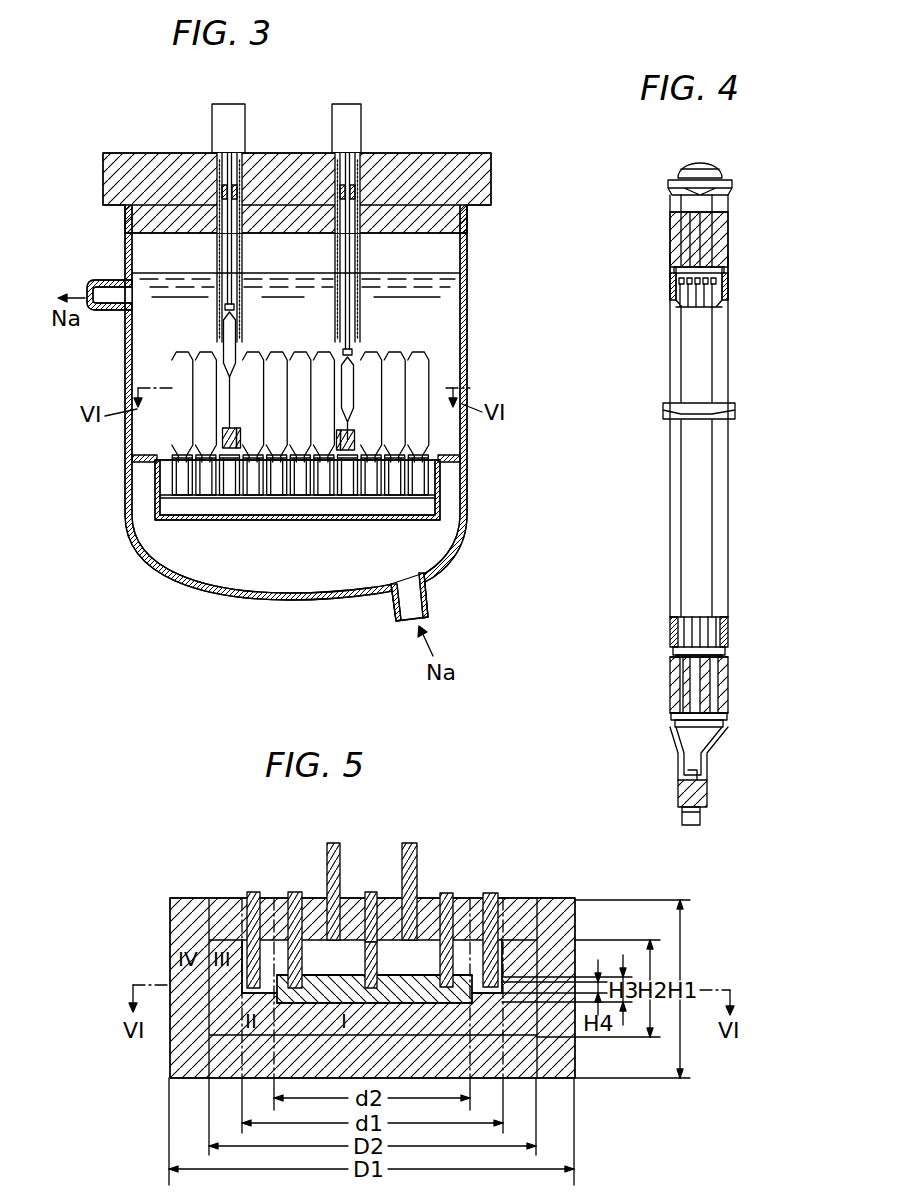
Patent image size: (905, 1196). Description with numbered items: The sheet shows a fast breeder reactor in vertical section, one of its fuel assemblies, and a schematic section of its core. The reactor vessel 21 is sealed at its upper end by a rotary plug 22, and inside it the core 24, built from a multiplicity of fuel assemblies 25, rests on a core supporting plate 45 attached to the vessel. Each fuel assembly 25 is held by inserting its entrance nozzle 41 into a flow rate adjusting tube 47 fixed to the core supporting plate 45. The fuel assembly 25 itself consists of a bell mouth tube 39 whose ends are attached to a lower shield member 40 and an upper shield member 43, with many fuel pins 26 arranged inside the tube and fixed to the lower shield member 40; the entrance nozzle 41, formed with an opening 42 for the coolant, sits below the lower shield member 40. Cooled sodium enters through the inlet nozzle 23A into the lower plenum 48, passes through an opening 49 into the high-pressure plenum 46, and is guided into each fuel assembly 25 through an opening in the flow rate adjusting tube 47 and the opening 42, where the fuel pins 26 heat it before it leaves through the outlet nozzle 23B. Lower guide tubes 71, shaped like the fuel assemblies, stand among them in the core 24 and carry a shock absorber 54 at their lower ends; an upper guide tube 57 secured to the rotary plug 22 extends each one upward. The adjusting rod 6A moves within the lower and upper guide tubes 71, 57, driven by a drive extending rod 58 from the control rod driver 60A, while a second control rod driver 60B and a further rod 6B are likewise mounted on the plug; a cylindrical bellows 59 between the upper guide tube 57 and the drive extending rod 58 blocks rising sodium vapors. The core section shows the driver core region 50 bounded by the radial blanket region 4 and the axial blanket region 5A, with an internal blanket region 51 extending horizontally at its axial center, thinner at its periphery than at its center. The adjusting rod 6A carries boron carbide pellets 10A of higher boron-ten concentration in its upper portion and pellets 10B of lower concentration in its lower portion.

In FIG. 5, the radial blanket region 4 is at (170, 1055).
In FIG. 5, the axial blanket region 5A is at (232, 905).
In FIG. 3, the adjusting rod 6A is at (359, 362).
In FIG. 5, the adjusting rod 6A is at (490, 893).
In FIG. 3, the thermocouple 6B is at (233, 352).
In FIG. 5, the thermocouple 6B is at (417, 850).
In FIG. 5, the B4C pellet 10A is at (370, 893).
In FIG. 5, the B4C pellet 10B is at (378, 968).
In FIG. 3, the reactor vessel 21 is at (468, 333).
In FIG. 3, the rotary plug 22 is at (390, 158).
In FIG. 3, the inlet nozzle 23A is at (431, 600).
In FIG. 3, the outlet nozzle 23B is at (107, 312).
In FIG. 3, the core 24 is at (171, 358).
In FIG. 5, the core 24 is at (170, 962).
In FIG. 3, the fuel assembly 25 is at (421, 360).
In FIG. 4, the fuel assembly 25 is at (728, 475).
In FIG. 4, the fuel pin 26 is at (709, 633).
In FIG. 4, the bell mouth tube 39 is at (668, 638).
In FIG. 4, the lower shield member 40 is at (668, 692).
In FIG. 3, the entrance nozzle 41 is at (250, 500).
In FIG. 4, the entrance nozzle 41 is at (712, 756).
In FIG. 4, the opening 42 is at (703, 778).
In FIG. 4, the upper shield member 43 is at (672, 237).
In FIG. 3, the core supporting plate 45 is at (138, 460).
In FIG. 3, the high-pressure plenum 46 is at (171, 500).
In FIG. 3, the flow rate adjusting tube 47 is at (160, 478).
In FIG. 3, the lower plenum 48 is at (339, 562).
In FIG. 3, the opening 49 is at (448, 470).
In FIG. 5, the driver core region 50 is at (215, 990).
In FIG. 5, the internal blanket region 51 is at (418, 996).
In FIG. 3, the shock absorber 54 is at (222, 437).
In FIG. 3, the upper guide tube 57 is at (243, 262).
In FIG. 3, the drive extending rod 58 is at (227, 260).
In FIG. 3, the cylindrical bellows 59 is at (221, 193).
In FIG. 3, the control rod driver 60A is at (346, 110).
In FIG. 3, the control rod driver 60B is at (227, 110).
In FIG. 3, the lower guide tube 71 is at (239, 430).